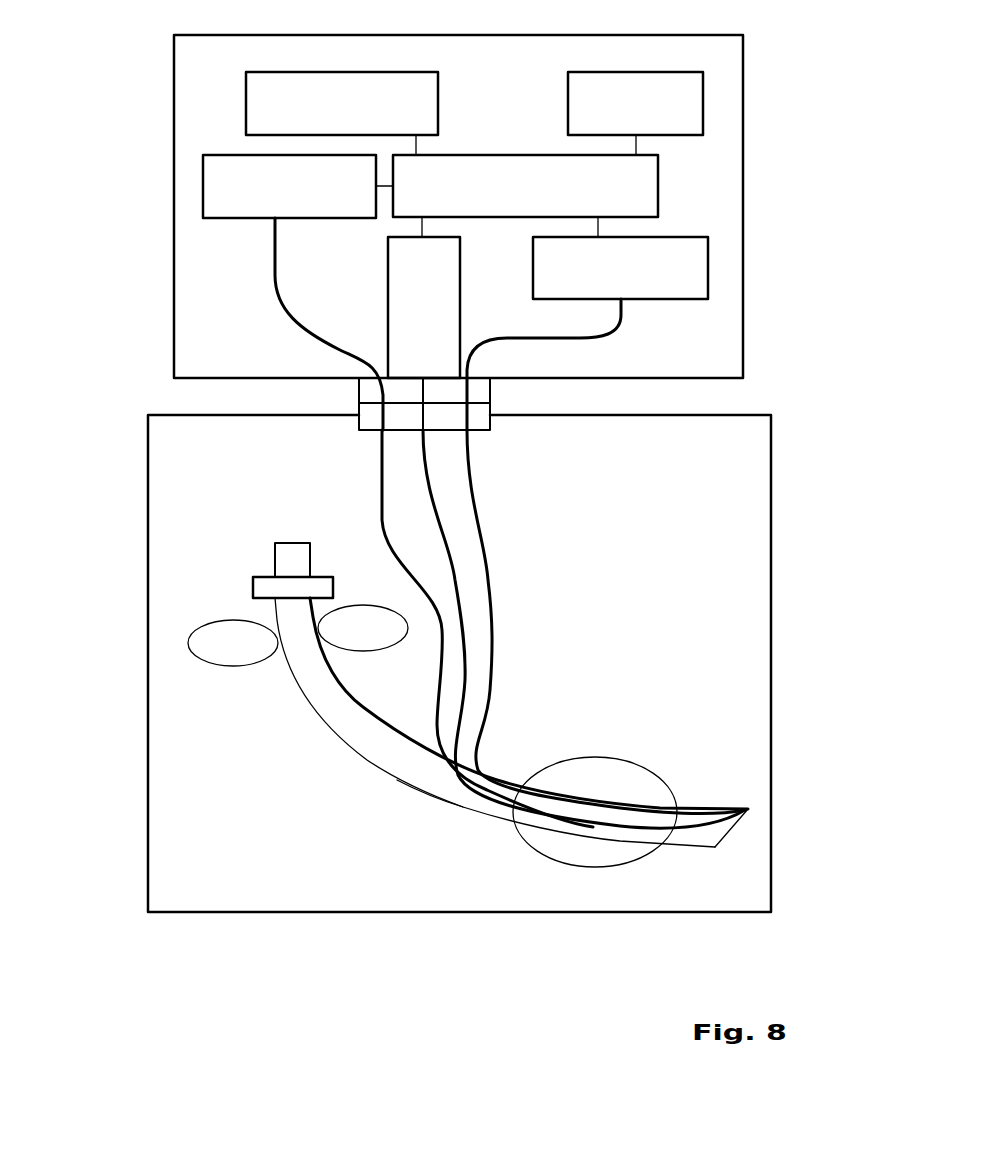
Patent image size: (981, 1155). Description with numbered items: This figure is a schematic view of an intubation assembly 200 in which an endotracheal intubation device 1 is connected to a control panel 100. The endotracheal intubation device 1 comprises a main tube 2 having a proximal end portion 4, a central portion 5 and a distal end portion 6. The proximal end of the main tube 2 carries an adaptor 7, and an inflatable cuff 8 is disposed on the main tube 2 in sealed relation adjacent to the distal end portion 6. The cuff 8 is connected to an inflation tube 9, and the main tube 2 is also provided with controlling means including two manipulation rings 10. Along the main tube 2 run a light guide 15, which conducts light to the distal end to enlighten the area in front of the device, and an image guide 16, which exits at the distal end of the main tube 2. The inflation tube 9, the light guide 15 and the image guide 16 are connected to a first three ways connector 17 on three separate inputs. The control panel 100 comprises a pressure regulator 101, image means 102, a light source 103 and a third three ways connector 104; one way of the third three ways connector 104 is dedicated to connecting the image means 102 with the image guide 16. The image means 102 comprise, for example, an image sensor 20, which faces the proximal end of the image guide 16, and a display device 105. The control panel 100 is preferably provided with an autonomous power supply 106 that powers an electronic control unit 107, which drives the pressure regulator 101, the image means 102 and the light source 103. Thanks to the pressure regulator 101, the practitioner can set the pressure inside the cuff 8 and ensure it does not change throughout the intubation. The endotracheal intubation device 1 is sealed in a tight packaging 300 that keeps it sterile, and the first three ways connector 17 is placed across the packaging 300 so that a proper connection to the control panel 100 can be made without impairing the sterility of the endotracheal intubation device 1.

The endotracheal intubation device 1 is at (380, 797).
The main tube 2 is at (333, 720).
The proximal end portion 4 is at (263, 615).
The central portion 5 is at (463, 808).
The distal end portion 6 is at (706, 804).
The adaptor 7 is at (282, 560).
The cuff 8 is at (595, 860).
The inflation tube 9 is at (382, 525).
The manipulation rings 10 is at (345, 650).
The light guide 15 is at (480, 555).
The image guide 16 is at (470, 622).
The first three ways connector 17 is at (480, 430).
The image sensor 20 is at (424, 307).
The control panel 100 is at (155, 173).
The pressure regulator 101 is at (289, 186).
The image means 102 is at (253, 102).
The light source 103 is at (620, 268).
The third three ways connector 104 is at (357, 423).
The display device 105 is at (342, 103).
The autonomous power supply 106 is at (635, 103).
The electronic control unit 107 is at (525, 186).
The intubation assembly 200 is at (82, 360).
The packaging 300 is at (132, 860).